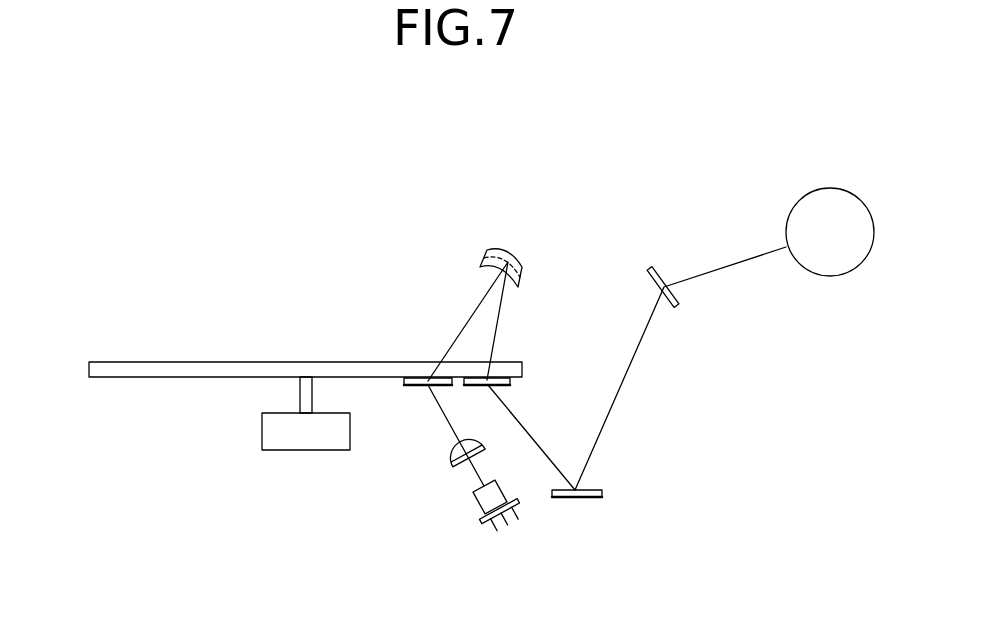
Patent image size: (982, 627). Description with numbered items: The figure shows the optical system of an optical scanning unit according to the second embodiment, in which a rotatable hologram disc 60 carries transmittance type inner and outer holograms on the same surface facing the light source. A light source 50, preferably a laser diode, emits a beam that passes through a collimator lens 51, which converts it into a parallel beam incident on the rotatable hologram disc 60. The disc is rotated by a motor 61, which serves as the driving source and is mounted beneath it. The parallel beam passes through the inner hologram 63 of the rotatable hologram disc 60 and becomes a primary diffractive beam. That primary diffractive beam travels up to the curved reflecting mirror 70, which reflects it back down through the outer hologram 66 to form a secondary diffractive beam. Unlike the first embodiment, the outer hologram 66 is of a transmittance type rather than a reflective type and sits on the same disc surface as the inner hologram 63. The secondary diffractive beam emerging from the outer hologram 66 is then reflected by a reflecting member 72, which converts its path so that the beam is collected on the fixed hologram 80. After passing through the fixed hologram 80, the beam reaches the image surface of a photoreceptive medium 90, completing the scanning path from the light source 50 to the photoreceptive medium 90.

The light source 50 is at (484, 505).
The collimator lens 51 is at (452, 462).
The rotatable hologram disc 60 is at (108, 368).
The motor 61 is at (270, 432).
The inner hologram 63 is at (415, 386).
The outer hologram 66 is at (512, 382).
The curved reflecting mirror 70 is at (503, 257).
The reflecting member 72 is at (603, 491).
The fixed hologram 80 is at (660, 270).
The photoreceptive medium 90 is at (818, 197).